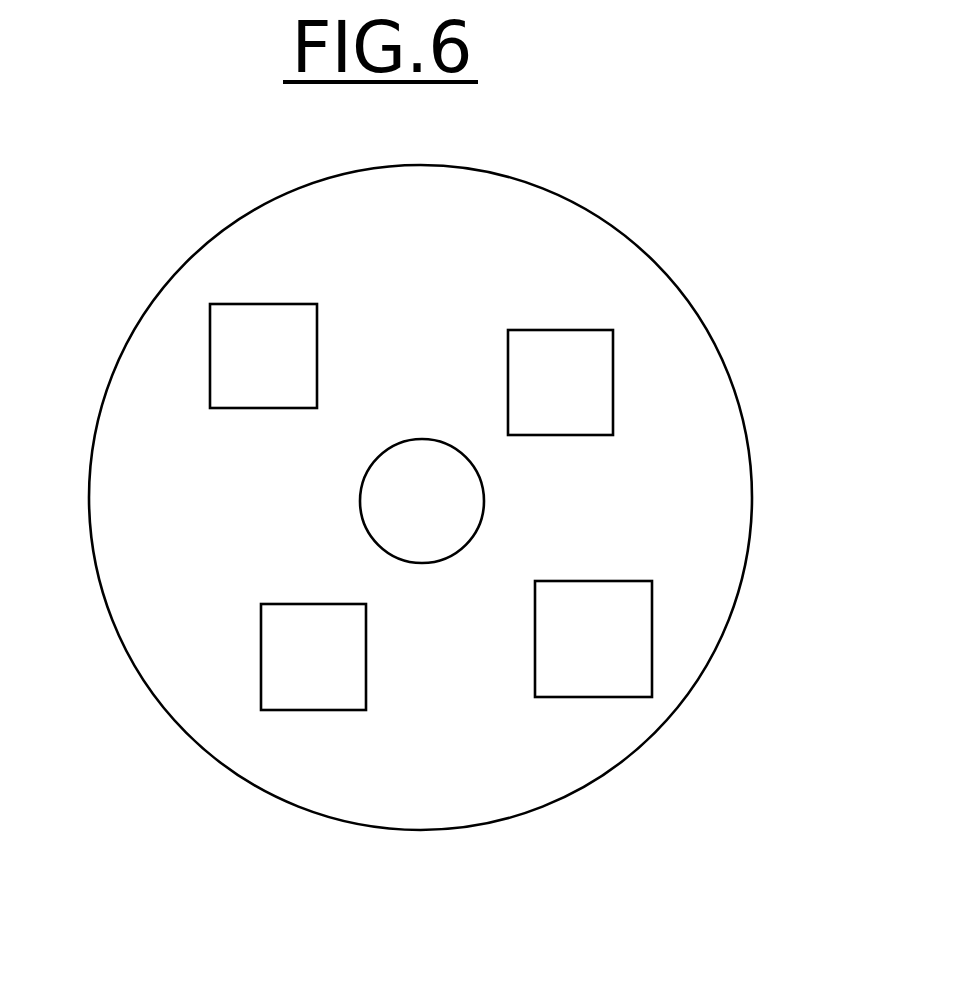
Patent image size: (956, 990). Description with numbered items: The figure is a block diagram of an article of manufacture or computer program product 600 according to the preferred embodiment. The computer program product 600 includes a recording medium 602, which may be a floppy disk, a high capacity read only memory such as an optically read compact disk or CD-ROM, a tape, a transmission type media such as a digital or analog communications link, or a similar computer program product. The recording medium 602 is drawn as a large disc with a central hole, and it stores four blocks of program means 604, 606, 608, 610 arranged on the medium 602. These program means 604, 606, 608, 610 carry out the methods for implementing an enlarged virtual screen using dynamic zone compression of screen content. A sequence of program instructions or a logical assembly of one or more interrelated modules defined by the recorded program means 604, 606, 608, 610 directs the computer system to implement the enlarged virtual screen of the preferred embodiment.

The computer program product 600 is at (435, 497).
The recording medium 602 is at (143, 308).
The program means 604 is at (313, 657).
The program means 606 is at (593, 639).
The program means 608 is at (560, 382).
The program means 610 is at (263, 356).